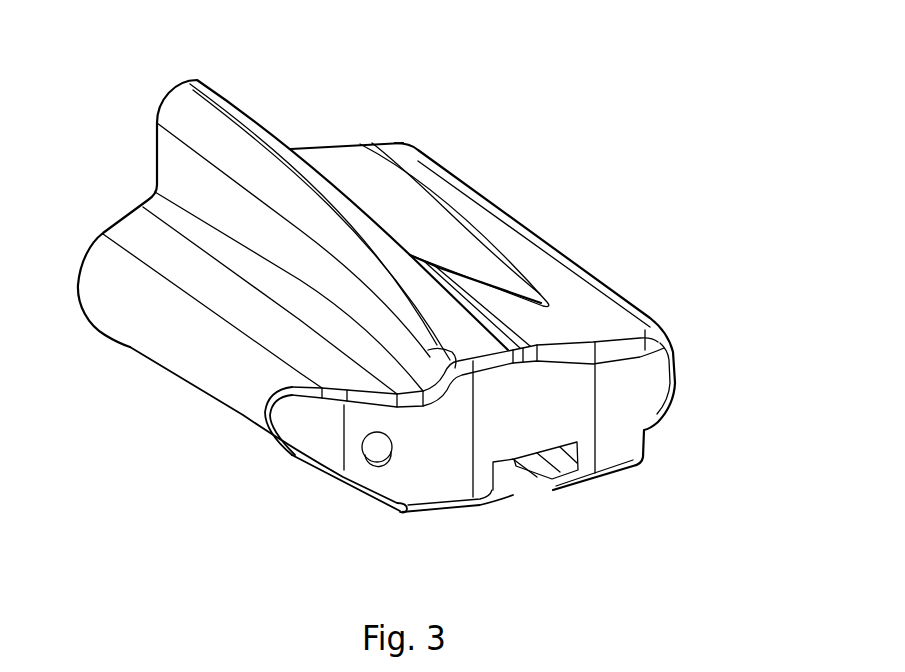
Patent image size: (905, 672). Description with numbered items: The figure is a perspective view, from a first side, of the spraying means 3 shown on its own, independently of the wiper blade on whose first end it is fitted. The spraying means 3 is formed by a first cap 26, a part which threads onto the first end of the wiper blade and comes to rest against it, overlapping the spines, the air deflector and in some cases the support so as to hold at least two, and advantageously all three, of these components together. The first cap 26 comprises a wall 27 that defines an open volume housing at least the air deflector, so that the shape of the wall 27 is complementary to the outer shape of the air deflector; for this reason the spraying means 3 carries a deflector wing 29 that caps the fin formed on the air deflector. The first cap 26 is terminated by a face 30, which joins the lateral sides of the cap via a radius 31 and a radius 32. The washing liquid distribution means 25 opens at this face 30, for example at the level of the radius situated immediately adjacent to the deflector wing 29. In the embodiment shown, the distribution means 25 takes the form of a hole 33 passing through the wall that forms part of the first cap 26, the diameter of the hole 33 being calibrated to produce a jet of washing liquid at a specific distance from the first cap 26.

The spraying means 3 is at (646, 183).
The washing liquid distribution means 25 is at (352, 470).
The first cap 26 is at (603, 313).
The wall 27 is at (247, 315).
The deflector wing 29 is at (210, 127).
The face 30 is at (605, 413).
The radius 31 is at (360, 420).
The radius 32 is at (655, 368).
The hole 33 is at (391, 453).